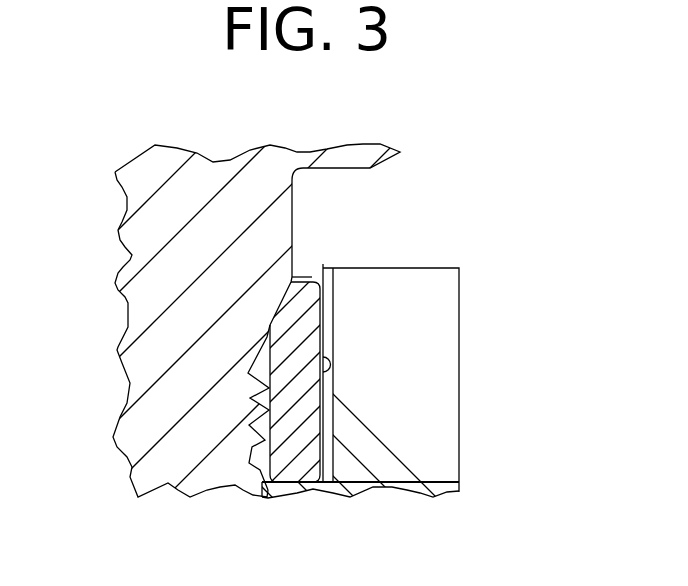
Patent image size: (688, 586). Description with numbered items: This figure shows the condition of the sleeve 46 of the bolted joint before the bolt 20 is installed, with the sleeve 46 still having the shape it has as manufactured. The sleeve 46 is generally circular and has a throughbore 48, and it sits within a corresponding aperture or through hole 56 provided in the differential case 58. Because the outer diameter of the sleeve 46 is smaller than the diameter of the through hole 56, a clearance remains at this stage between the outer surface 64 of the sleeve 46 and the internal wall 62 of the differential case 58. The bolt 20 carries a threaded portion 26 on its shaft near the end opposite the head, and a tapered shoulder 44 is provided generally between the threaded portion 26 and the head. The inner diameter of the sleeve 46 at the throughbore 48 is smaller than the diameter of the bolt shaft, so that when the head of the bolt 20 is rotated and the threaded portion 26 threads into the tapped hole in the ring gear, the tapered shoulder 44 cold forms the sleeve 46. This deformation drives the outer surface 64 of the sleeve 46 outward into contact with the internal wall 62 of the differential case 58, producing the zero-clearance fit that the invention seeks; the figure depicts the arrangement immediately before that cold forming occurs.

The bolt 20 is at (367, 158).
The tapered shoulder 44 is at (287, 298).
The throughbore 48 is at (273, 338).
The sleeve 46 is at (305, 257).
The threaded portion 26 is at (259, 453).
The through hole 56 is at (329, 286).
The outer surface 64 is at (324, 355).
The internal wall 62 is at (332, 376).
The differential case 58 is at (452, 403).